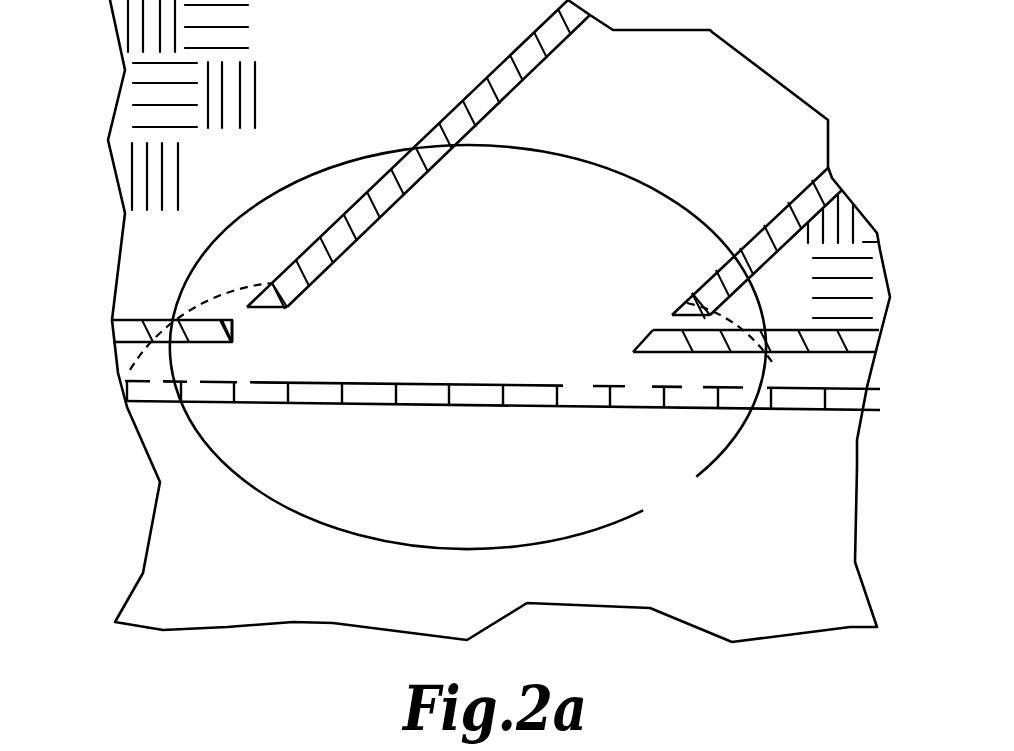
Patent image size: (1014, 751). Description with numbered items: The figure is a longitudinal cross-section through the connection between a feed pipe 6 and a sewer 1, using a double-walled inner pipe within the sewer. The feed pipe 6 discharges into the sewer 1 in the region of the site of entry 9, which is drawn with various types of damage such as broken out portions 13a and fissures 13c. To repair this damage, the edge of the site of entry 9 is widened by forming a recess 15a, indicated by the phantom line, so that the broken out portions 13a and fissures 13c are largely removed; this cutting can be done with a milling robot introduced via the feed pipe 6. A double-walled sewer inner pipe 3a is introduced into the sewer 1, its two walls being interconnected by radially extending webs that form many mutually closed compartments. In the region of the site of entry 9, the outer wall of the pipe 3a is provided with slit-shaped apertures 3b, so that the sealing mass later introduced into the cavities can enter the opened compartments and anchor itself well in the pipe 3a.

The sewer 1 is at (170, 319).
The double-walled sewer inner pipe 3a is at (123, 388).
The apertures 3b is at (476, 382).
The feed pipe 6 is at (432, 125).
The site of entry 9 is at (468, 347).
The broken out portions 13a is at (257, 333).
The fissures 13c is at (653, 310).
The recess 15a is at (143, 355).